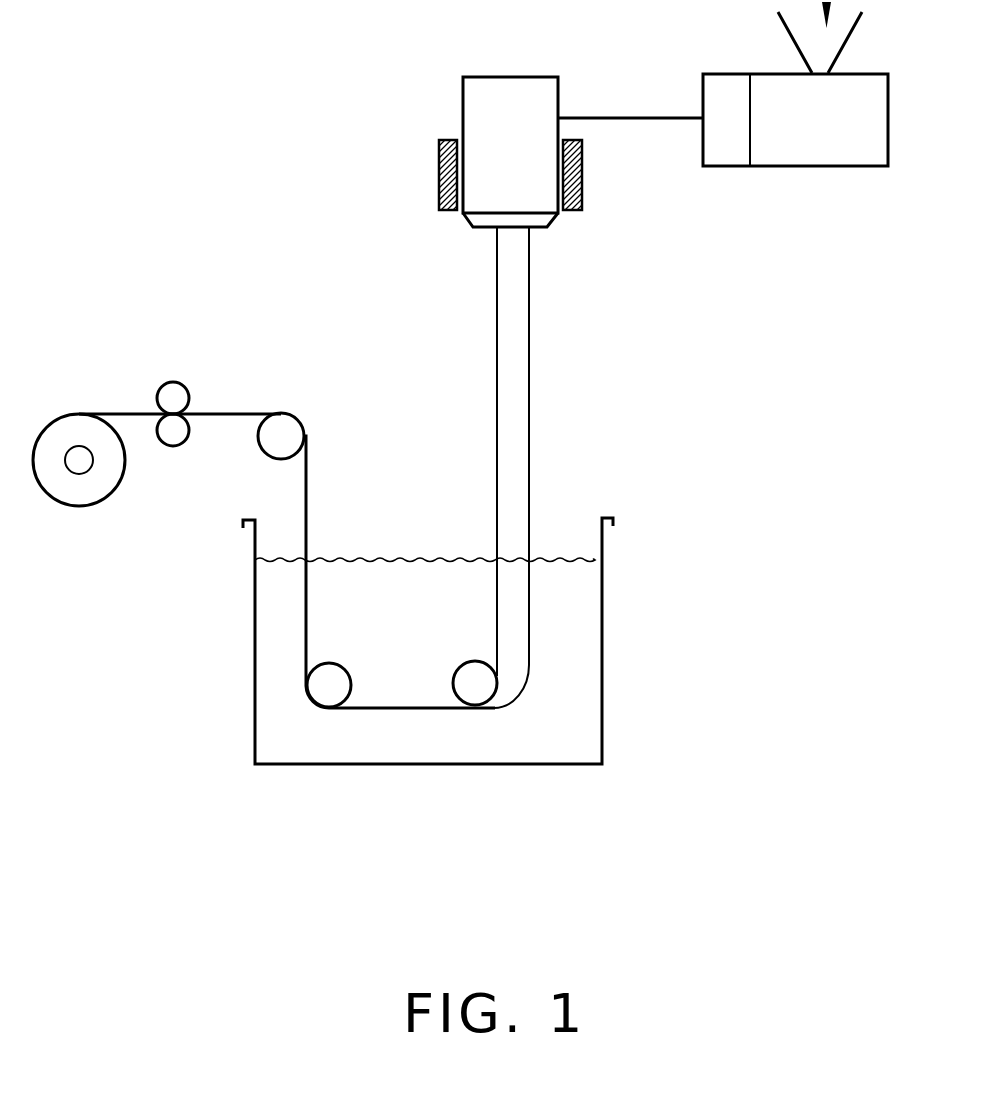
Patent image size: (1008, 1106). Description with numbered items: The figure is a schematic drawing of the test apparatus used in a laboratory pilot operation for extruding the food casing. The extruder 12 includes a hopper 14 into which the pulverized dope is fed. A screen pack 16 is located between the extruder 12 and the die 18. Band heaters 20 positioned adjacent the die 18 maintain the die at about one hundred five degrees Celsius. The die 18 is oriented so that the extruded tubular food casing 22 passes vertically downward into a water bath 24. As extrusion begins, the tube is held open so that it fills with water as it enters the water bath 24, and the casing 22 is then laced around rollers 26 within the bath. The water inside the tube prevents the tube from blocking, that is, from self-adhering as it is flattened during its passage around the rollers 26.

The extruder 12 is at (877, 168).
The hopper 14 is at (803, 53).
The screen pack 16 is at (723, 152).
The die 18 is at (505, 72).
The band heaters 20 is at (439, 170).
The extruded tubular food casing 22 is at (529, 385).
The water bath 24 is at (602, 627).
The rollers 26 is at (470, 662).